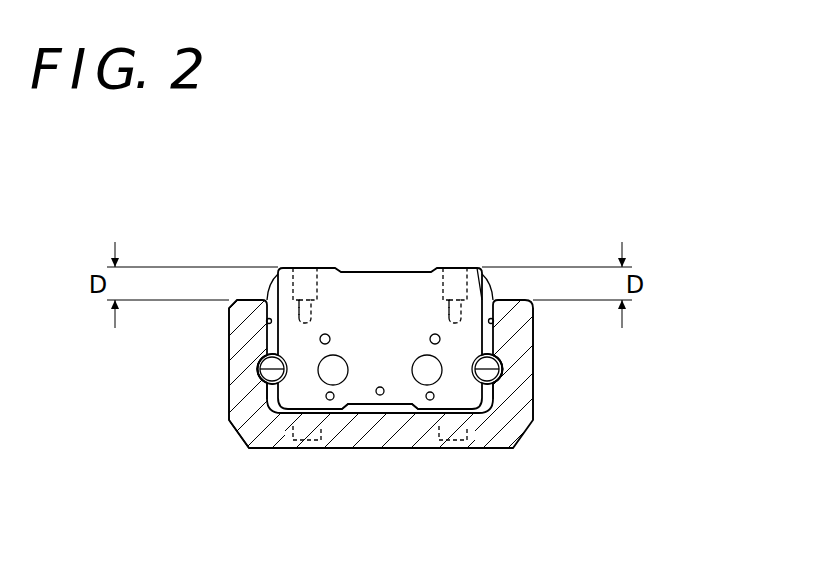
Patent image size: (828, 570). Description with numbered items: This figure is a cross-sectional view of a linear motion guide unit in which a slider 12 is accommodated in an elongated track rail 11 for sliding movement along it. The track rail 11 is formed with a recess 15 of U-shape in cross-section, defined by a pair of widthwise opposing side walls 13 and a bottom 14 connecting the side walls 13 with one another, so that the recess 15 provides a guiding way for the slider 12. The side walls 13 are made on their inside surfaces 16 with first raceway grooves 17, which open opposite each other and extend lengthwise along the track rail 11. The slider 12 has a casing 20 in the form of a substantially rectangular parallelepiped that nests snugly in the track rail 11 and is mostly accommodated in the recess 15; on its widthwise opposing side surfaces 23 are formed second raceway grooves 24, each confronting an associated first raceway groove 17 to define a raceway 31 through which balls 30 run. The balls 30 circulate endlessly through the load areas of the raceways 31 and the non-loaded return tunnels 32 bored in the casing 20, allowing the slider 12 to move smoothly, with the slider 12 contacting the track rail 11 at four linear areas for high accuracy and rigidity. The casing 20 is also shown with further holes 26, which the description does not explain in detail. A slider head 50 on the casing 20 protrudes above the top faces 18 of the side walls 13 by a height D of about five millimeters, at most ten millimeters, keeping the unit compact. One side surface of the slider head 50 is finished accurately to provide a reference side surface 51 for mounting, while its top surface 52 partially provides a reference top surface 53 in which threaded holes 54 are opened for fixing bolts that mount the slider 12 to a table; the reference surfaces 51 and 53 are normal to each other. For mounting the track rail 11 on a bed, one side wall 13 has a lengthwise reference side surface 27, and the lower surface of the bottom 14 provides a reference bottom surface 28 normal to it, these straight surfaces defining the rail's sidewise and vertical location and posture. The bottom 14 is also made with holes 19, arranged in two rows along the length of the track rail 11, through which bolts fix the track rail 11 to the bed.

The track rail 11 is at (232, 445).
The slider 12 is at (414, 267).
The side walls 13 is at (232, 355).
The bottom 14 is at (357, 443).
The recess 15 is at (406, 408).
The inside surfaces 16 is at (266, 320).
The first raceway grooves 17 is at (238, 410).
The top faces 18 is at (240, 298).
The holes 19 is at (307, 426).
The casing 20 is at (290, 265).
The side surfaces 23 is at (268, 292).
The second raceway grooves 24 is at (268, 373).
The hole in rail 26 is at (328, 336).
The reference side surface 27 is at (228, 421).
The reference bottom surface 28 is at (278, 448).
The balls 30 is at (259, 361).
The raceway 31 is at (262, 357).
The return tunnels 32 is at (333, 370).
The slider head 50 is at (392, 267).
The reference side surface 51 is at (498, 272).
The top surface 52 is at (372, 267).
The reference top surface 53 is at (327, 266).
The threaded holes 54 is at (305, 266).